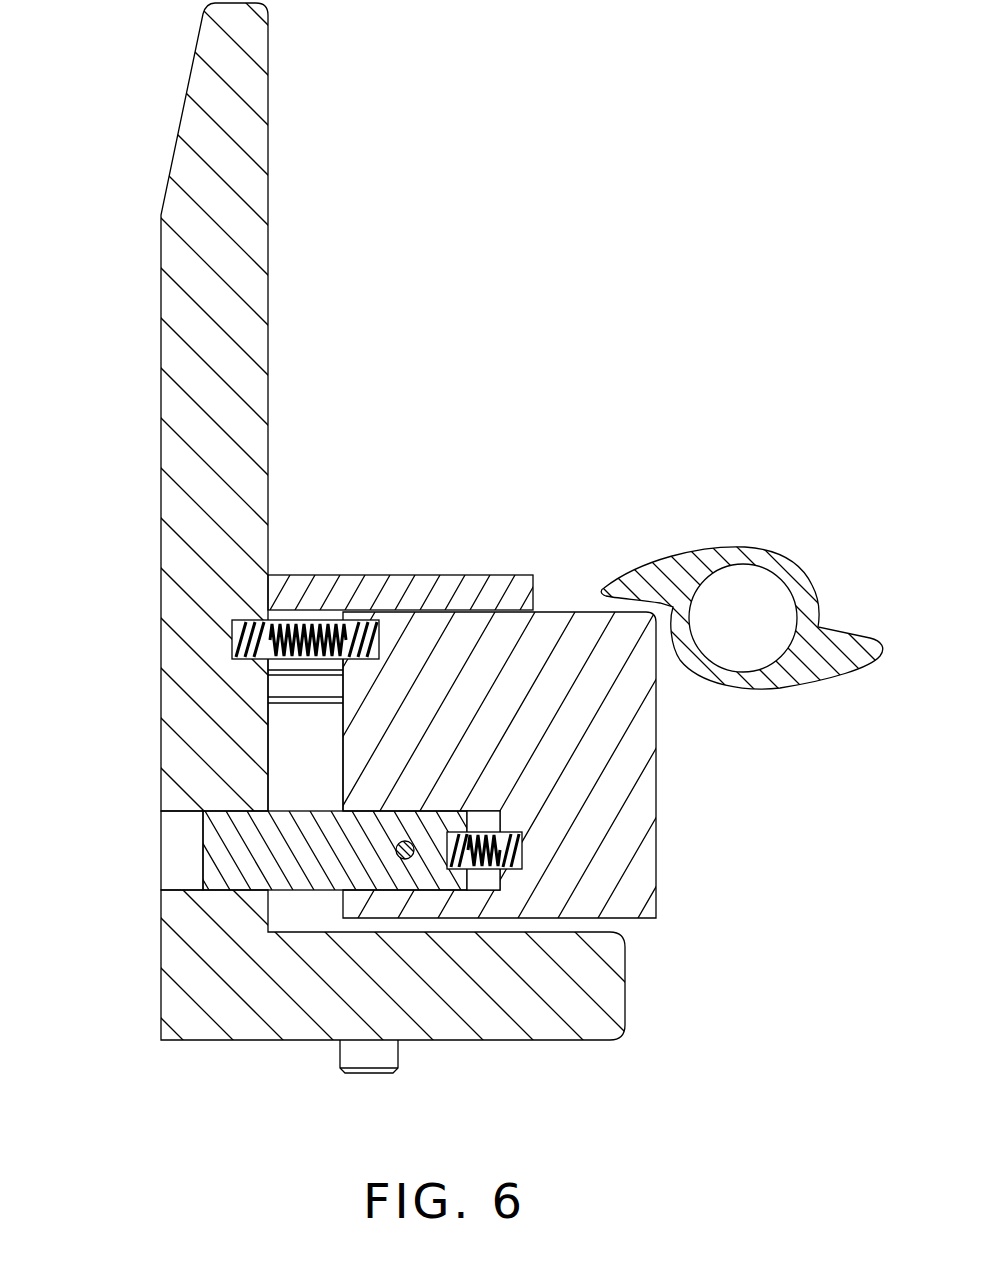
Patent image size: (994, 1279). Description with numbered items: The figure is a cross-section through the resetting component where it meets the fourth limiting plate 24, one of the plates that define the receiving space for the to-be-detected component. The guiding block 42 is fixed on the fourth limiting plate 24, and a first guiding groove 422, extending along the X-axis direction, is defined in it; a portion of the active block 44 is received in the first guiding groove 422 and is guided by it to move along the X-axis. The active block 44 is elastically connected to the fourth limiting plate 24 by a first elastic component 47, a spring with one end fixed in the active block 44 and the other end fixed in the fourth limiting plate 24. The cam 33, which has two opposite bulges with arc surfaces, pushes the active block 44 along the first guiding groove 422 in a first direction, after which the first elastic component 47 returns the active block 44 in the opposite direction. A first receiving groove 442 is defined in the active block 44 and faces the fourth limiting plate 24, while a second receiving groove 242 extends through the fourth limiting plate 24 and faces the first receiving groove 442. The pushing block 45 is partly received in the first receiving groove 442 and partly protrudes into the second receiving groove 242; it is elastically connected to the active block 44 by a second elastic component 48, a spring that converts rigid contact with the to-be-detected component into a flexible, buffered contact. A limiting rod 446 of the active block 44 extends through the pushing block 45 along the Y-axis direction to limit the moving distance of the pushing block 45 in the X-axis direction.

The fourth limiting plate 24 is at (190, 183).
The second receiving groove 242 is at (173, 843).
The cam 33 is at (700, 560).
The guiding block 42 is at (430, 592).
The first guiding groove 422 is at (323, 611).
The active block 44 is at (630, 757).
The first receiving groove 442 is at (487, 884).
The limiting rod 446 is at (407, 859).
The pushing block 45 is at (225, 872).
The first elastic component 47 is at (300, 623).
The second elastic component 48 is at (523, 832).